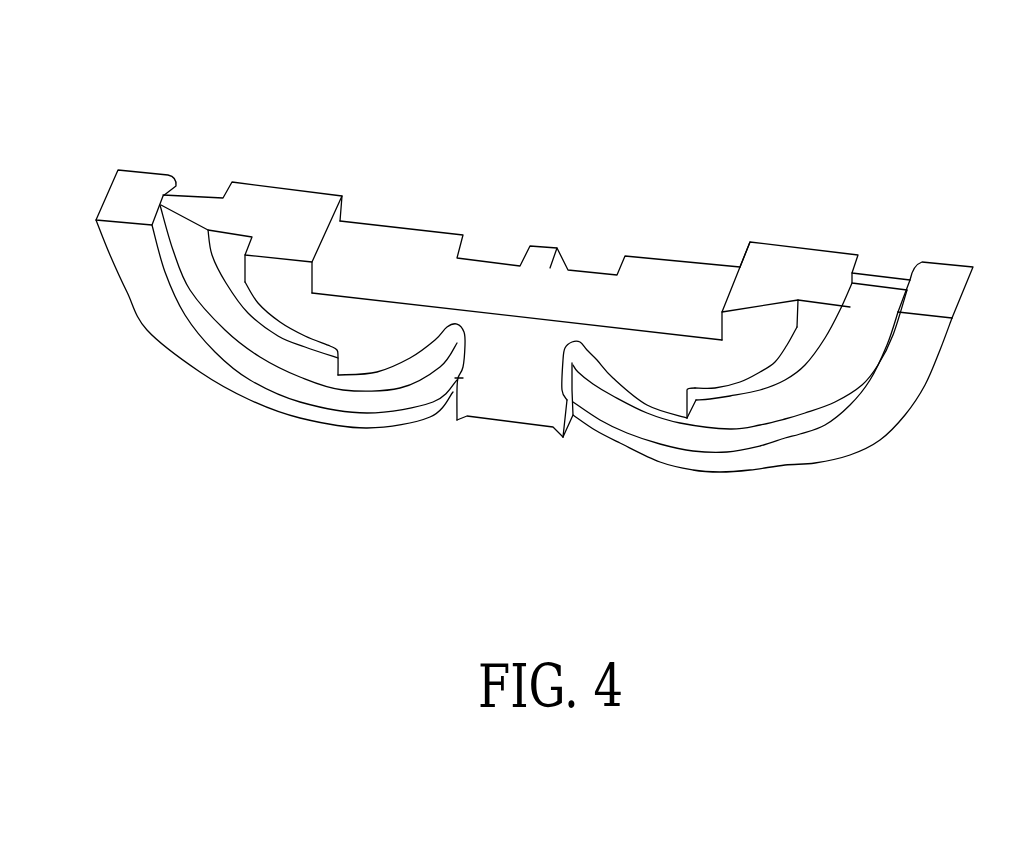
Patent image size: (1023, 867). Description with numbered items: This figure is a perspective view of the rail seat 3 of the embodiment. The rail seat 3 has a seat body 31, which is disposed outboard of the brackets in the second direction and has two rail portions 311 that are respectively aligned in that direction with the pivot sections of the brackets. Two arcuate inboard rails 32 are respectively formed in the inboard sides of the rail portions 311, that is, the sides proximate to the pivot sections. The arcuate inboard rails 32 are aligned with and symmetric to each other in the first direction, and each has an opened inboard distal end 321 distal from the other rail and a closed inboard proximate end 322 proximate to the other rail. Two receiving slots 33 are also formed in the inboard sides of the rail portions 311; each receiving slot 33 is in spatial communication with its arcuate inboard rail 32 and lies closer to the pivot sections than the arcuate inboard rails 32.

The rail seat 3 is at (558, 122).
The seat body 31 is at (505, 337).
The rail portions 311 is at (275, 415).
The arcuate inboard rails 32 is at (190, 223).
The opened inboard distal ends 321 is at (180, 213).
The closed inboard proximate ends 322 is at (453, 353).
The receiving slots 33 is at (228, 252).